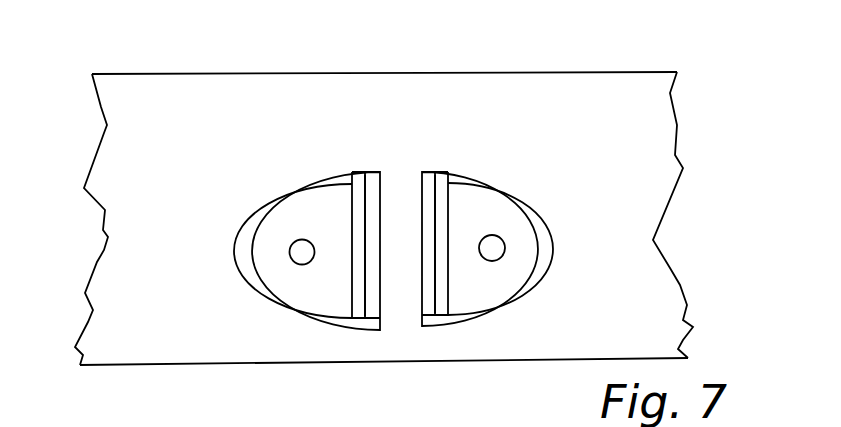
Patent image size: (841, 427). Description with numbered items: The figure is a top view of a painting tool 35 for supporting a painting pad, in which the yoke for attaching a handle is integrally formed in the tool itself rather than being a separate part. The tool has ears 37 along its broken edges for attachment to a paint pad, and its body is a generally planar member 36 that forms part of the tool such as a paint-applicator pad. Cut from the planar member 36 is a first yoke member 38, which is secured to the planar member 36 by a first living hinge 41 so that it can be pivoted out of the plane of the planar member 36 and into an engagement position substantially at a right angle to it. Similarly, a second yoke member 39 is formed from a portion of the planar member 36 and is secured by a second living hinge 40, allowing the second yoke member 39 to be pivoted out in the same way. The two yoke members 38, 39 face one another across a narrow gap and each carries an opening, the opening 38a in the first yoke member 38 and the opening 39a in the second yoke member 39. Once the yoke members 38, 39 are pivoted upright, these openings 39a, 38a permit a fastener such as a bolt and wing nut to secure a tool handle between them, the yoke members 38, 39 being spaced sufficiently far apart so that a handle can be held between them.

The painting tool 35 is at (565, 50).
The planar member 36 is at (215, 82).
The ears 37 is at (100, 107).
The first yoke member 38 is at (480, 208).
The opening 38a is at (492, 248).
The second yoke member 39 is at (292, 207).
The opening 39a is at (297, 252).
The second living hinge 40 is at (370, 192).
The first living hinge 41 is at (428, 200).